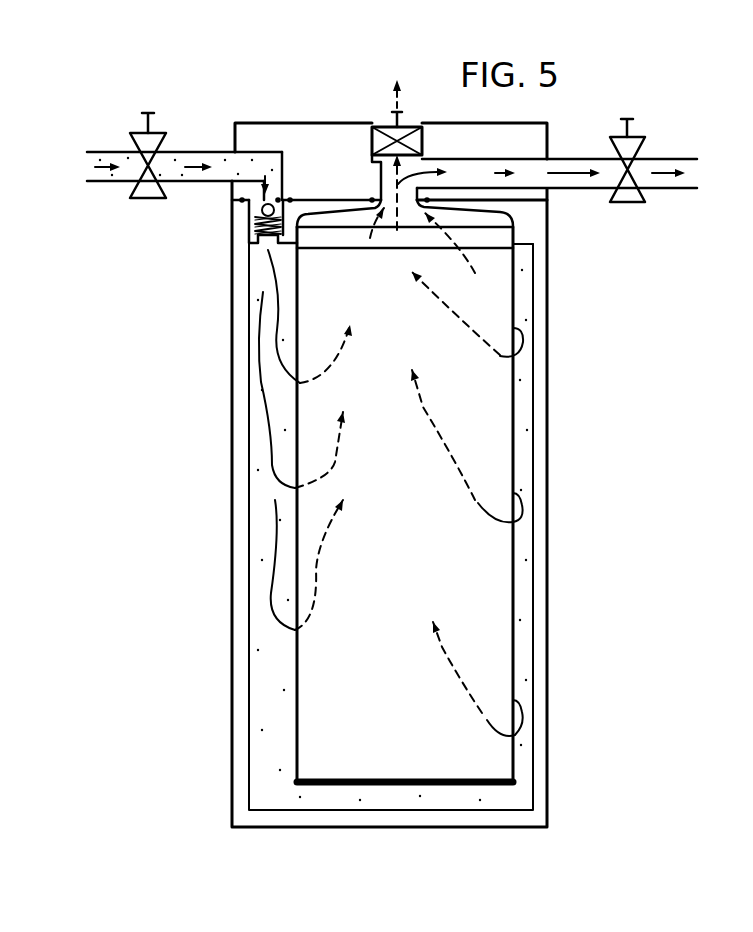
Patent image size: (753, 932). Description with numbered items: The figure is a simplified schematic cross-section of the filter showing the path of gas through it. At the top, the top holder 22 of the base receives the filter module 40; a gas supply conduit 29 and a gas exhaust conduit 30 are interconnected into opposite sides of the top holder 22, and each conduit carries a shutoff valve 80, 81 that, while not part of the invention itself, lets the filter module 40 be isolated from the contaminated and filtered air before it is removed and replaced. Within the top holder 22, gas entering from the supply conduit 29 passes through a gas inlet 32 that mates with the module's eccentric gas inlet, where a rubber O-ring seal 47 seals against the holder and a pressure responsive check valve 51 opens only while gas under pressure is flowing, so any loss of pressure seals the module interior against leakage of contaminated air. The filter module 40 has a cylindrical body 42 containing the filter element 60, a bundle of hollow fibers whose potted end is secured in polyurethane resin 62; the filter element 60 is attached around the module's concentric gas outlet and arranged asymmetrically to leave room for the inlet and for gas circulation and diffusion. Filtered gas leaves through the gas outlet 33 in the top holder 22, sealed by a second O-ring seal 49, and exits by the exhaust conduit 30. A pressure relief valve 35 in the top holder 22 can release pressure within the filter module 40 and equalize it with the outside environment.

The top holder 22 is at (322, 140).
The gas supply conduit 29 is at (210, 152).
The gas exhaust conduit 30 is at (668, 192).
The gas inlet 32 is at (282, 153).
The gas outlet 33 is at (427, 198).
The pressure relief valve 35 is at (413, 125).
The filter module 40 is at (205, 714).
The cylindrical body 42 is at (231, 663).
The O-ring seal 47 is at (256, 218).
The O-ring seal 49 is at (370, 200).
The pressure responsive check valve 51 is at (250, 232).
The filter element 60 is at (420, 558).
The polyurethane resin 62 is at (502, 243).
The shutoff valve 80 is at (137, 135).
The shutoff valve 81 is at (632, 147).